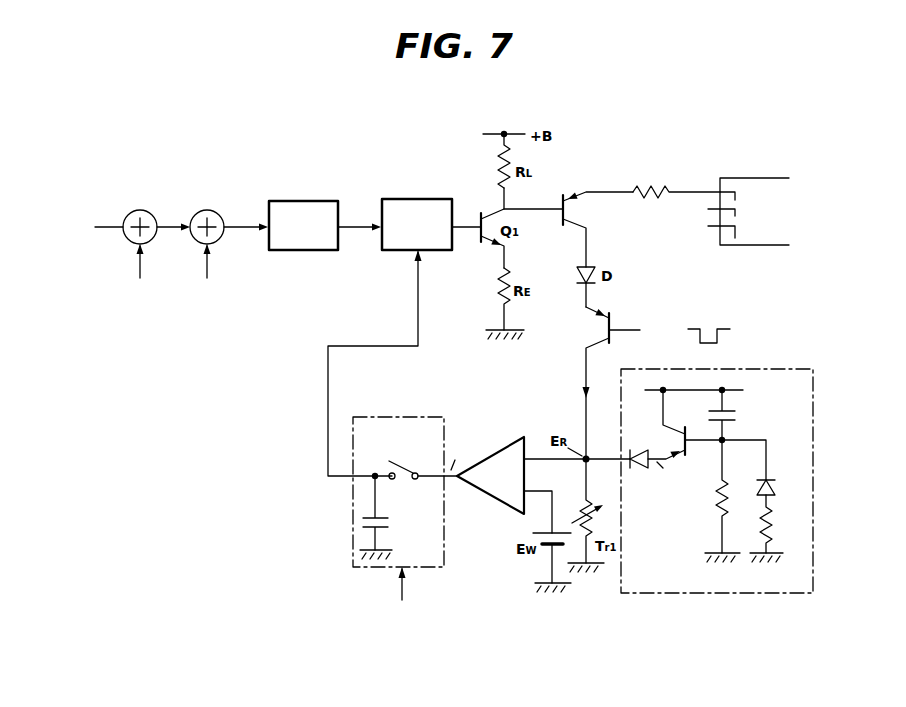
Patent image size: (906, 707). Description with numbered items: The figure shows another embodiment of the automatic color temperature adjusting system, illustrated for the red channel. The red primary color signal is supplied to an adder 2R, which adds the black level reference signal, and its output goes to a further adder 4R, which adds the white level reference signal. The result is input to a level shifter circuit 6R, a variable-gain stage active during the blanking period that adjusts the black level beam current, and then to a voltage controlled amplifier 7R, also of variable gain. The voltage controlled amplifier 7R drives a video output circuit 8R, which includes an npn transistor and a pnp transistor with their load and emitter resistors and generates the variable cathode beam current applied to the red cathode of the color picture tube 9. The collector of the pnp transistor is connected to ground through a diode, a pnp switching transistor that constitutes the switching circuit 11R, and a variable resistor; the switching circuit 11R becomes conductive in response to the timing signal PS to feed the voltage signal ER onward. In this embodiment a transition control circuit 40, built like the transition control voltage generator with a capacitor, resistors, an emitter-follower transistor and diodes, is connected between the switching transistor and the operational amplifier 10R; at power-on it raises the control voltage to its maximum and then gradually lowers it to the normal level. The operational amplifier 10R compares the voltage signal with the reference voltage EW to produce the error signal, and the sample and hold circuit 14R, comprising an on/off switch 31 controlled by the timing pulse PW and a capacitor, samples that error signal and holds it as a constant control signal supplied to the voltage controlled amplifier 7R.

The adder 2R is at (150, 212).
The adder 4R is at (216, 212).
The level shifter circuit 6R is at (316, 200).
The voltage controlled amplifier 7R is at (431, 198).
The video output circuit 8R is at (610, 186).
The color picture tube 9 is at (758, 178).
The switching circuit 11R is at (608, 312).
The sample and hold circuit 14R is at (407, 493).
The on/off switch 31 is at (402, 470).
The operational amplifier 10R is at (498, 452).
The transition control circuit 40 is at (762, 368).